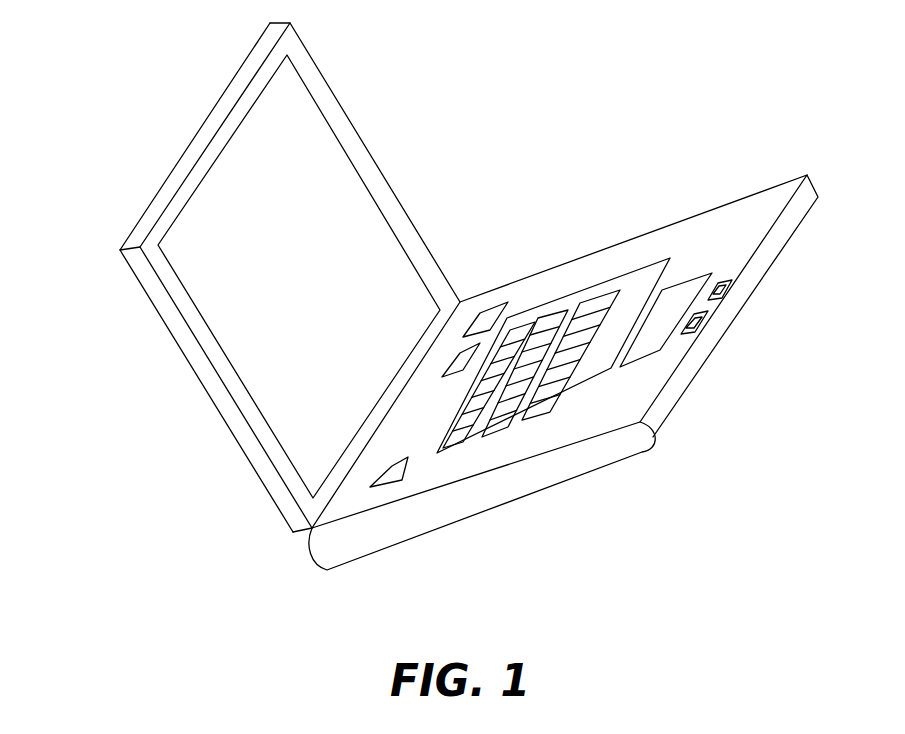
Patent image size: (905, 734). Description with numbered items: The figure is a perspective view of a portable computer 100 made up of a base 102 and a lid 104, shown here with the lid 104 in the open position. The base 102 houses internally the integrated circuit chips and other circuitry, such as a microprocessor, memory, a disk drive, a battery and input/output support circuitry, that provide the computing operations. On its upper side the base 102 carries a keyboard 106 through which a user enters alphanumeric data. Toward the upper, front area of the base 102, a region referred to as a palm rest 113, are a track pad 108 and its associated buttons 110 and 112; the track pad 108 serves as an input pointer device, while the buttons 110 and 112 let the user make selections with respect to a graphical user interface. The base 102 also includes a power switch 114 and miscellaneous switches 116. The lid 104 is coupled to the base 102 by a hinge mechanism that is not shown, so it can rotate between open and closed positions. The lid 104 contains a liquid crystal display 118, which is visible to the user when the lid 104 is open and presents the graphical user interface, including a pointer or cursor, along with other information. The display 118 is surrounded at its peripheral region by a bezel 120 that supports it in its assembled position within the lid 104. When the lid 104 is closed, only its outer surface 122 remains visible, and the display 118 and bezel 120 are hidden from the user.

The portable computer 100 is at (433, 316).
The base 102 is at (577, 374).
The lid 104 is at (240, 277).
The keyboard 106 is at (583, 297).
The track pad 108 is at (677, 292).
The button 110 is at (700, 313).
The button 112 is at (722, 283).
The palm rest 113 is at (717, 232).
The power switch 114 is at (388, 475).
The miscellaneous switches 116 is at (462, 357).
The liquid crystal display (LCD) 118 is at (307, 128).
The bezel 120 is at (377, 187).
The outer surface 122 is at (220, 105).